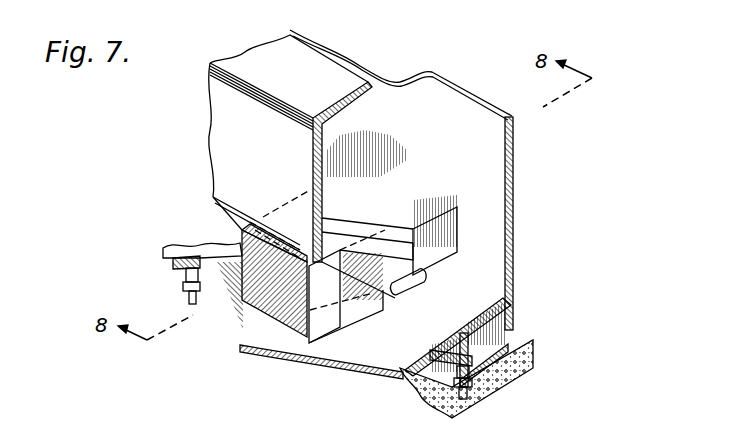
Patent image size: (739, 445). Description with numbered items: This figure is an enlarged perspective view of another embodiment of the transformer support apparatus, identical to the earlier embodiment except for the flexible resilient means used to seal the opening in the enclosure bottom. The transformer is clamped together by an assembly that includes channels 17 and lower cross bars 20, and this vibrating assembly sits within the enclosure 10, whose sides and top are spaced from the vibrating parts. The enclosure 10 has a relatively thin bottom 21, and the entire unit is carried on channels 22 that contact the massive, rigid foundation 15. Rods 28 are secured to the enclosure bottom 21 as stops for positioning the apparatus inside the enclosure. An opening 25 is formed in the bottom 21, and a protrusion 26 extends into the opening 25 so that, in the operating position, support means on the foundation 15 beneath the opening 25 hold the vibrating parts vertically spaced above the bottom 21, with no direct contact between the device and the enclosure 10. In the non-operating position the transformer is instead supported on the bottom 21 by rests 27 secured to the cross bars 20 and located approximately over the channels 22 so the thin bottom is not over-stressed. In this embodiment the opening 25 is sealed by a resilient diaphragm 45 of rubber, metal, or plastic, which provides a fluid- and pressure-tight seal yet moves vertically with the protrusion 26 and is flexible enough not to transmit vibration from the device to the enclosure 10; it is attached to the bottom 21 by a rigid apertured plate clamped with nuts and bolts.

The enclosure 10 is at (514, 172).
The foundation 15 is at (533, 360).
The channels 17 is at (222, 164).
The lower cross bars 20 is at (230, 229).
The bottom of the enclosure 21 is at (480, 287).
The channels 22 is at (510, 312).
The opening 25 is at (168, 255).
The protrusion 26 is at (260, 314).
The rests 27 is at (400, 245).
The rods 28 is at (420, 280).
The resilient diaphragm 45 is at (325, 348).